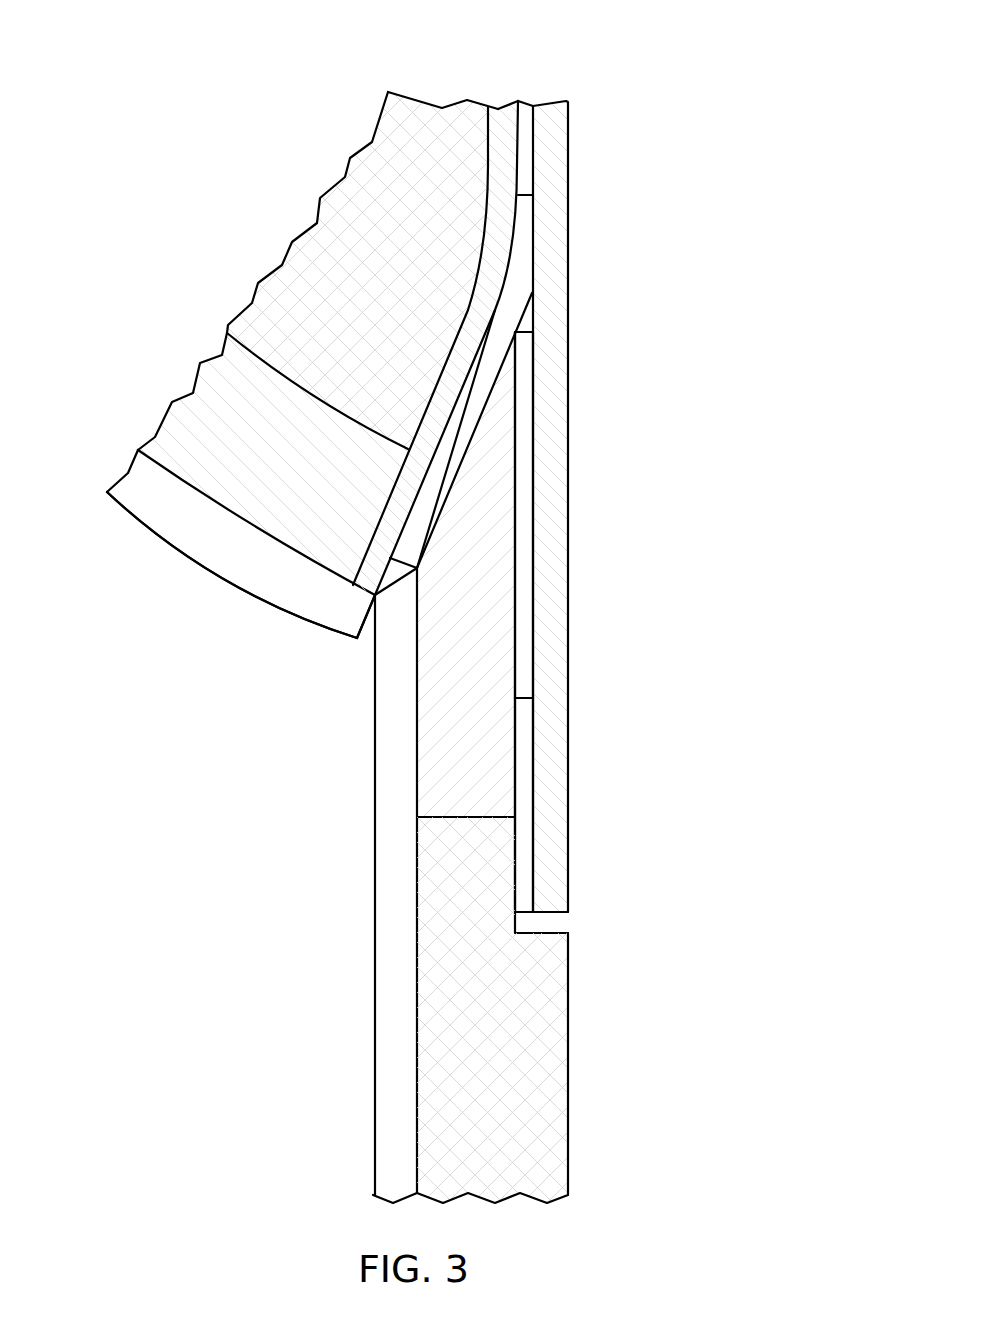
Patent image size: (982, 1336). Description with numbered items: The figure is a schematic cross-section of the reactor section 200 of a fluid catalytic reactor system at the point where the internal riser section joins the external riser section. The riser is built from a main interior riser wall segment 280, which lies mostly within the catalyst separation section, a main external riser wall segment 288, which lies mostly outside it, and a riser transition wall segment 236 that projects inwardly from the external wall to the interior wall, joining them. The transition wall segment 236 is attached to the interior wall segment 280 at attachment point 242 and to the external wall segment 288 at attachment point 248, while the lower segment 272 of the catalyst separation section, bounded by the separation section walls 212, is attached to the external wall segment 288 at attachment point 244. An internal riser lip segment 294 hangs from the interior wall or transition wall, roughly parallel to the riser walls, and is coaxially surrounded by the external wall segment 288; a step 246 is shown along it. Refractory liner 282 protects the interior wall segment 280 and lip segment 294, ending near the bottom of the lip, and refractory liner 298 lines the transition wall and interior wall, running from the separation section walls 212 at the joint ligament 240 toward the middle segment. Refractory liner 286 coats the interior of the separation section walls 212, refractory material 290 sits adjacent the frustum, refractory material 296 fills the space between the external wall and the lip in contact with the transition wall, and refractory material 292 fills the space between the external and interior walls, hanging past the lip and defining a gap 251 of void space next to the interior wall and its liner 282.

The combustor wall assembly 200 is at (726, 292).
The separation section walls 212 is at (110, 495).
The riser transition wall segment 236 is at (470, 443).
The joint ligament 240 is at (280, 610).
The attachment point 242 is at (523, 200).
The attachment point 244 is at (356, 640).
The second step 246 is at (533, 307).
The attachment point 248 is at (403, 563).
The gap 251 is at (578, 925).
The lower segment 272 is at (183, 555).
The main interior riser wall segment 280 is at (528, 102).
The refractory liner 282 is at (568, 148).
The refractory liner 286 is at (185, 394).
The main external riser wall segment 288 is at (375, 868).
The refractory material 290 is at (345, 177).
The refractory material 292 is at (568, 1045).
The internal riser lip segment 294 is at (533, 645).
The refractory material 296 is at (517, 698).
The refractory liner 298 is at (493, 107).